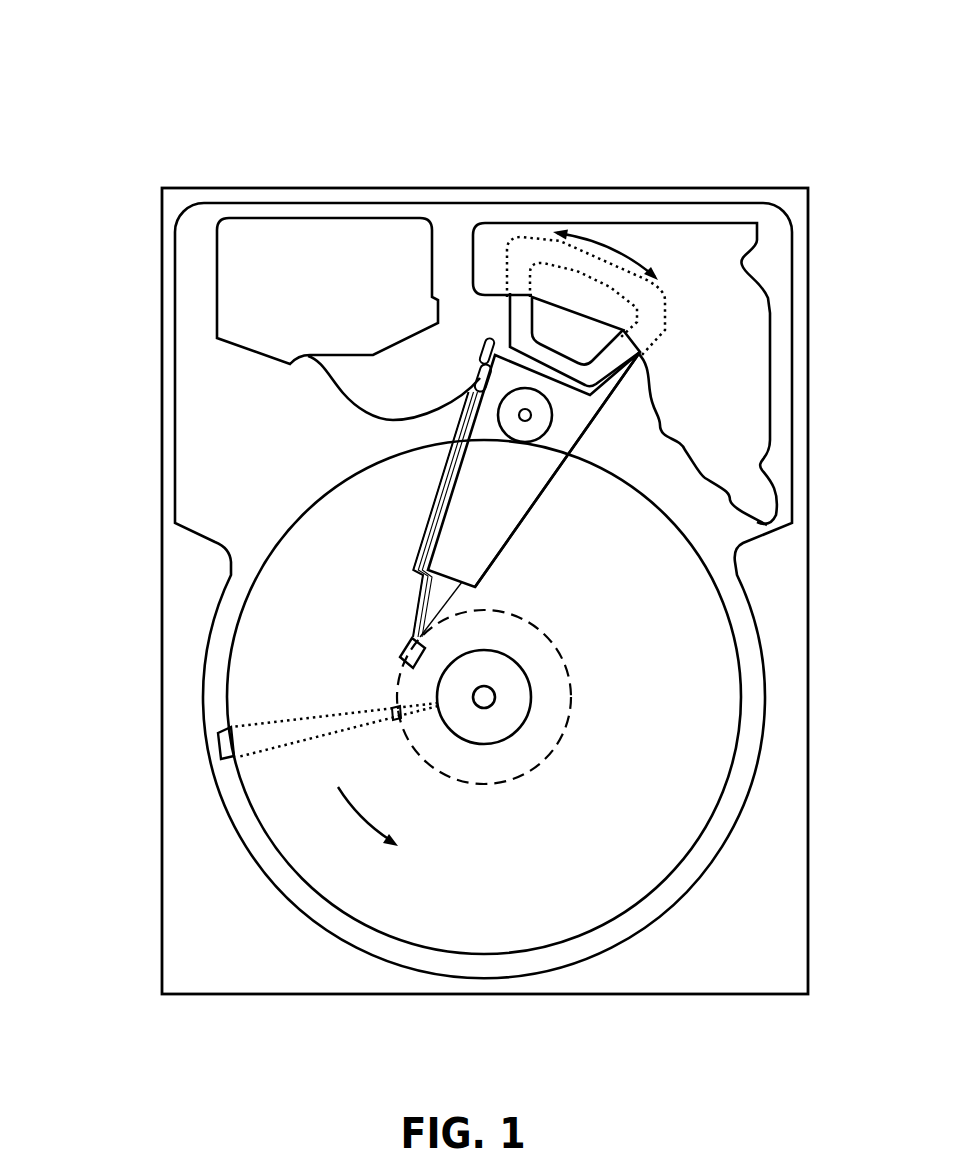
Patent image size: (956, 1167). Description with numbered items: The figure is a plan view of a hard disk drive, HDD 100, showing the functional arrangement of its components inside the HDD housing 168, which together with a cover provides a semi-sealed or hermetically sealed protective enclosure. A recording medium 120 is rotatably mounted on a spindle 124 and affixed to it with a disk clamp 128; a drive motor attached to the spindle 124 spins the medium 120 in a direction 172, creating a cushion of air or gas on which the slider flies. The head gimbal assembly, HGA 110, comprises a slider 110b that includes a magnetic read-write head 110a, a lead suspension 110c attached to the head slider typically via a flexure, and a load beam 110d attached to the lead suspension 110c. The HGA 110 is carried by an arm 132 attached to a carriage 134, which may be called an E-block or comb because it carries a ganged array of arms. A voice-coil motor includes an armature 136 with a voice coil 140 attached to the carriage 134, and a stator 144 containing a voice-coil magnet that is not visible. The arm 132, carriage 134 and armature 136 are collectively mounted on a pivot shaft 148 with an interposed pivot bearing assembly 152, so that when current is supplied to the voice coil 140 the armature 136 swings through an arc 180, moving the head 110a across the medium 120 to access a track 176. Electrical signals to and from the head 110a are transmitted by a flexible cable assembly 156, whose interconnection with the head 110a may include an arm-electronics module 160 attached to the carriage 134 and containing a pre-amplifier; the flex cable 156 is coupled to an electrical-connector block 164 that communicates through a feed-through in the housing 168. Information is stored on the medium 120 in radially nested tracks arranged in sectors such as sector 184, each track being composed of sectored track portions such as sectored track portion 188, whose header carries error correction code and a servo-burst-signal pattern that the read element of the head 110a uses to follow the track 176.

The hard disk drive 100 is at (86, 62).
The head gimbal assembly 110 is at (80, 505).
The magnetic read-write head 110a is at (395, 672).
The slider 110b is at (400, 660).
The lead suspension 110c is at (415, 637).
The load beam 110d is at (410, 567).
The recording medium 120 is at (667, 648).
The spindle 124 is at (487, 696).
The disk clamp 128 is at (510, 713).
The arm 132 is at (477, 532).
The carriage 134 is at (543, 448).
The armature 136 is at (503, 333).
The voice coil 140 is at (520, 307).
The stator 144 is at (737, 317).
The pivot shaft 148 is at (528, 415).
The pivot bearing assembly 152 is at (538, 427).
The flexible cable assembly 156 is at (343, 390).
The arm-electronics module 160 is at (476, 380).
The electrical-connector block 164 is at (242, 290).
The HDD housing 168 is at (790, 203).
The direction of spin 172 is at (367, 820).
The track 176 is at (563, 657).
The arc 180 is at (607, 243).
The sector 184 is at (210, 745).
The sectored track portion 188 is at (392, 708).